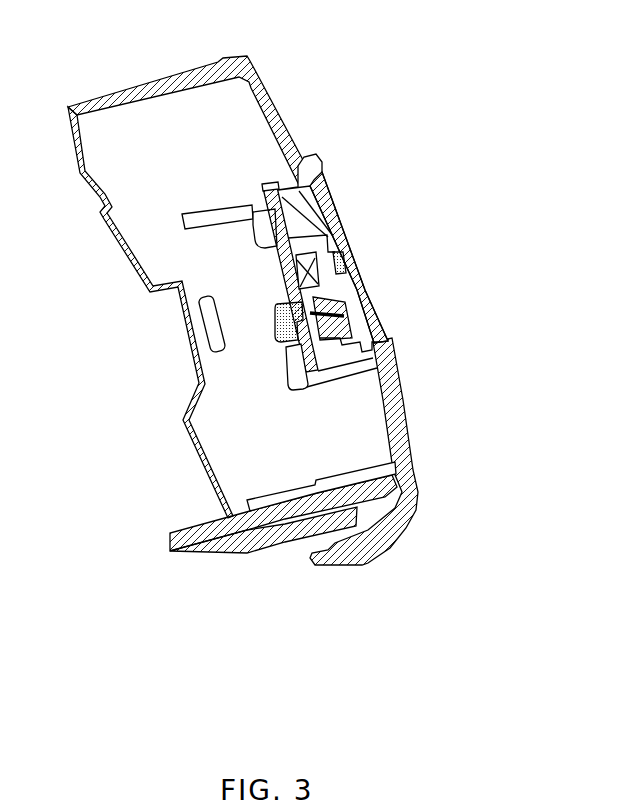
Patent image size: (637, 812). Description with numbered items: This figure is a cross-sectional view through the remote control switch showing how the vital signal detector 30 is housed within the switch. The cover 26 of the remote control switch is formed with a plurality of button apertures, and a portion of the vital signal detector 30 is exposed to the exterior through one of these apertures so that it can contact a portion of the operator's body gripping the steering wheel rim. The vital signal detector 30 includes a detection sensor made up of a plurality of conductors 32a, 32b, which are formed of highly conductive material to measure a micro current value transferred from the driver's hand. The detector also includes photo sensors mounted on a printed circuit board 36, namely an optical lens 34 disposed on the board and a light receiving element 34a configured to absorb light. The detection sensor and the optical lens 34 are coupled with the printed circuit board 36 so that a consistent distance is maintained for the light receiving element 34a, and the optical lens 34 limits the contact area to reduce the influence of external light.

The cover 26 is at (102, 96).
The vital signal detector 30 is at (388, 271).
The conductor 32a is at (310, 203).
The conductor 32b is at (378, 334).
The optical lens 34 is at (345, 270).
The light receiving element 34a is at (287, 283).
The printed circuit board 36 is at (263, 268).